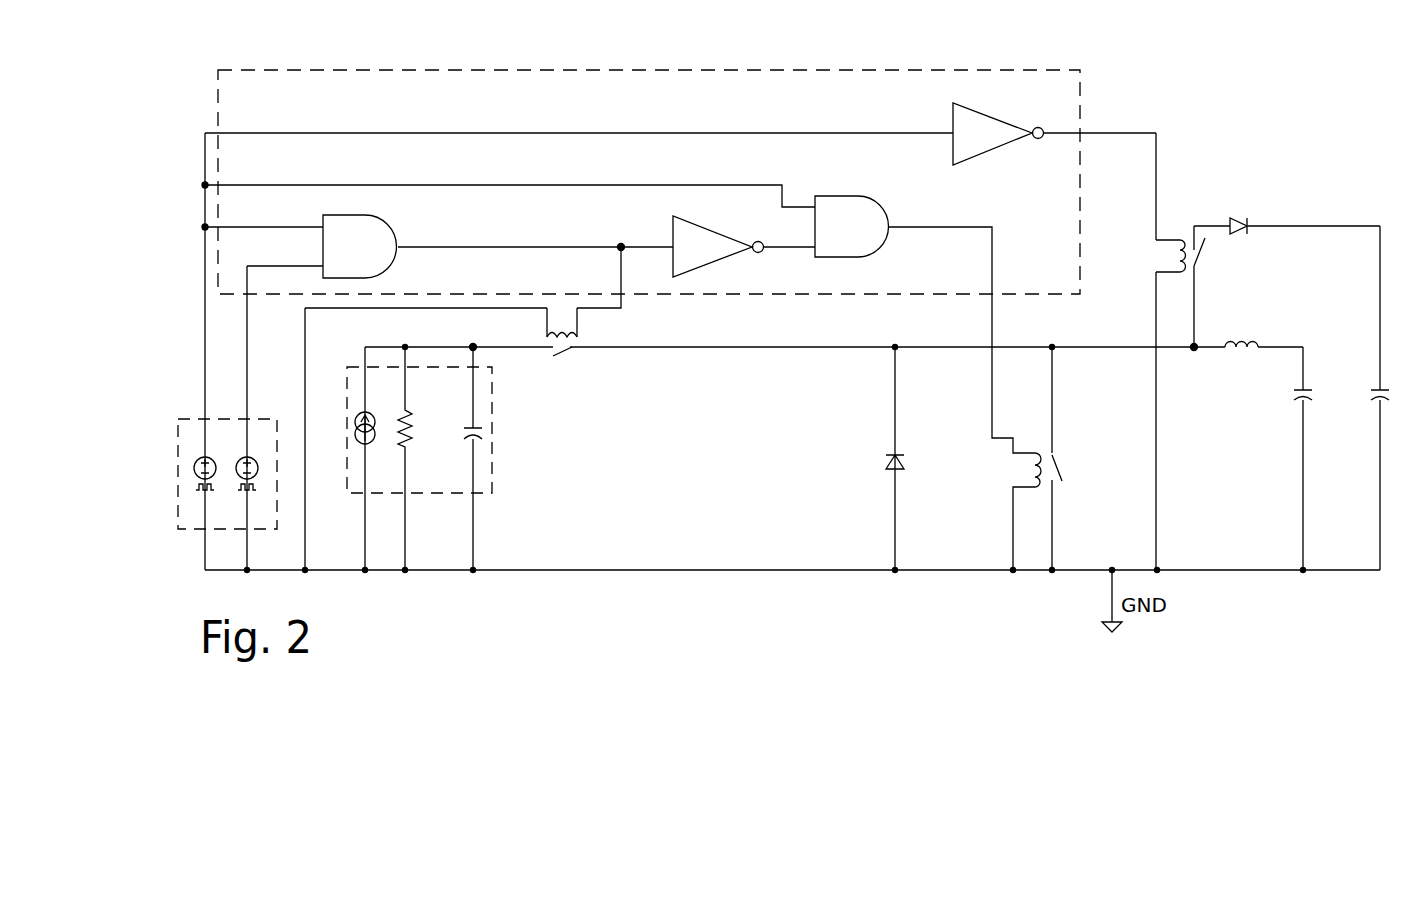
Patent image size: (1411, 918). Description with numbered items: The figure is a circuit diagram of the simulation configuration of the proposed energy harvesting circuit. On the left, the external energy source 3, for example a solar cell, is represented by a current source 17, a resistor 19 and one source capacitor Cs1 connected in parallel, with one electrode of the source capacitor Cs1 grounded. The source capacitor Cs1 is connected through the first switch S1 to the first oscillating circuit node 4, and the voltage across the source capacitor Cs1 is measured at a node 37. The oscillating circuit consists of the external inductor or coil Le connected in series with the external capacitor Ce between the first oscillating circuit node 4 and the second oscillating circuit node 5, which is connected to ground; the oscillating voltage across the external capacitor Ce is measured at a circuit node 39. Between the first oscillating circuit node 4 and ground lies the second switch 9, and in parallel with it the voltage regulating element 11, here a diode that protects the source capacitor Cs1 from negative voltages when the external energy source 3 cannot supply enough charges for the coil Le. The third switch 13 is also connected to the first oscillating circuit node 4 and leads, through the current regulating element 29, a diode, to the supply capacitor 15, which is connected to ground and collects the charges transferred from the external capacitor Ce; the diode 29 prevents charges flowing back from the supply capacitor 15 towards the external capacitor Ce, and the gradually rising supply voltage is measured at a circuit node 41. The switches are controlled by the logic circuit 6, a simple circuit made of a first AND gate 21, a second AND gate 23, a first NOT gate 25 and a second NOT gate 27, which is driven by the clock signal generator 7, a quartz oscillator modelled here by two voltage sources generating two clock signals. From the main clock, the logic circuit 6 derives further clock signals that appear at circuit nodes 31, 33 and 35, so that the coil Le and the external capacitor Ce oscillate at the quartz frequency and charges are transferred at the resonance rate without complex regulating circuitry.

The logic circuit 6 is at (300, 88).
The first AND gate 21 is at (377, 237).
The second AND gate 23 is at (872, 216).
The first NOT gate 25 is at (713, 244).
The second NOT gate 27 is at (967, 125).
The circuit node 31 is at (626, 244).
The circuit node 33 is at (965, 225).
The circuit node 35 is at (1152, 212).
The node 37 is at (475, 347).
The first switch S1 is at (579, 367).
The second switch 9 is at (1076, 460).
The voltage regulating element 11 is at (895, 455).
The third switch 13 is at (1143, 274).
The current regulating element 29 is at (1236, 219).
The first oscillating circuit node 4 is at (1194, 352).
The external inductor Le is at (1248, 329).
The circuit node 39 is at (1303, 345).
The external capacitor Ce is at (1285, 474).
The second oscillating circuit node 5 is at (1302, 424).
The circuit node 41 is at (1378, 317).
The supply capacitor 15 is at (1377, 404).
The clock signal generator 7 is at (222, 437).
The external energy source 3 is at (488, 470).
The current source 17 is at (360, 412).
The resistor 19 is at (405, 445).
The source capacitor Cs1 is at (487, 428).